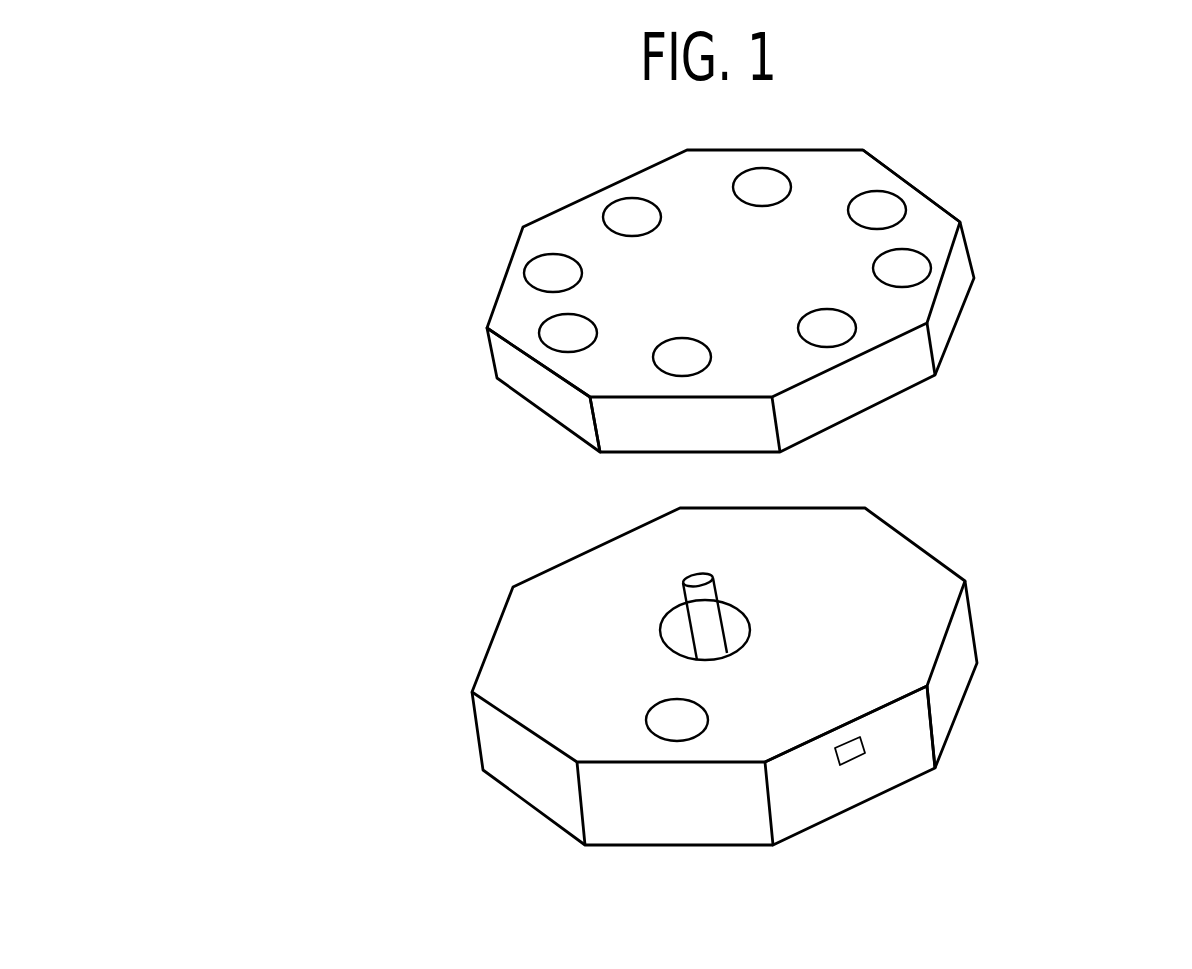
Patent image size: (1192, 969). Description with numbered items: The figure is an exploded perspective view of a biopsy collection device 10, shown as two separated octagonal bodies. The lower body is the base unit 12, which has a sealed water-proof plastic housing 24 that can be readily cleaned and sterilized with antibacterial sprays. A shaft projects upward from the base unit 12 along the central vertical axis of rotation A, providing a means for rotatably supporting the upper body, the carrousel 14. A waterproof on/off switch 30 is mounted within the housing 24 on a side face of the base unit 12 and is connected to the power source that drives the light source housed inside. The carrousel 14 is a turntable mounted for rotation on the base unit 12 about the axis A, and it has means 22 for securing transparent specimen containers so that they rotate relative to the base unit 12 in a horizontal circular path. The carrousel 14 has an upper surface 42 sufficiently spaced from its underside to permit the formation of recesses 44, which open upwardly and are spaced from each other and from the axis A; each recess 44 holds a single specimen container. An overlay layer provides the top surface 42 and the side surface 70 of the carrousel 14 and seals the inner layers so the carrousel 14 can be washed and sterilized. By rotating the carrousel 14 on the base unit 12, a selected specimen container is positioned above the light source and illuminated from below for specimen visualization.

The biopsy collection device 10 is at (399, 231).
The base unit 12 is at (461, 732).
The carrousel 14 is at (976, 218).
The means for securing transparent specimen containers 22 is at (588, 212).
The housing 24 is at (818, 824).
The on/off switch 30 is at (882, 740).
The upper surface 42 is at (837, 162).
The recesses 44 is at (918, 187).
The side surface 70 is at (474, 355).
The central vertical axis of rotation A is at (731, 583).